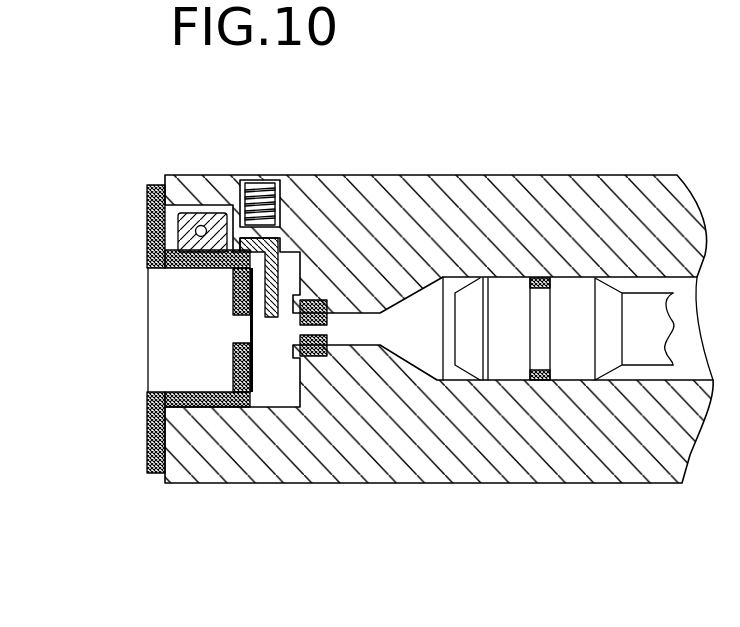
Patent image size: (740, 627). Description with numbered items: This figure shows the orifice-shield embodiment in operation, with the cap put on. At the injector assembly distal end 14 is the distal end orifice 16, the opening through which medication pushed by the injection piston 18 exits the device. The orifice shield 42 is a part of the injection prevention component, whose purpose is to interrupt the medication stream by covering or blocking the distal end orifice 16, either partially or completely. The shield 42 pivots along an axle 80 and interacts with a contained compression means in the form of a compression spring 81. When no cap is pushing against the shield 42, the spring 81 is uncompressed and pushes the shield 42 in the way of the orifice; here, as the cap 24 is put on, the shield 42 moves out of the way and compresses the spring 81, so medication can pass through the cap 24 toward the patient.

The injector assembly distal end 14 is at (247, 452).
The distal end orifice 16 is at (327, 353).
The injection piston 18 is at (510, 350).
The cap 24 is at (150, 428).
The orifice shield 42 is at (280, 290).
The axle 80 is at (196, 231).
The compression spring 81 is at (262, 238).